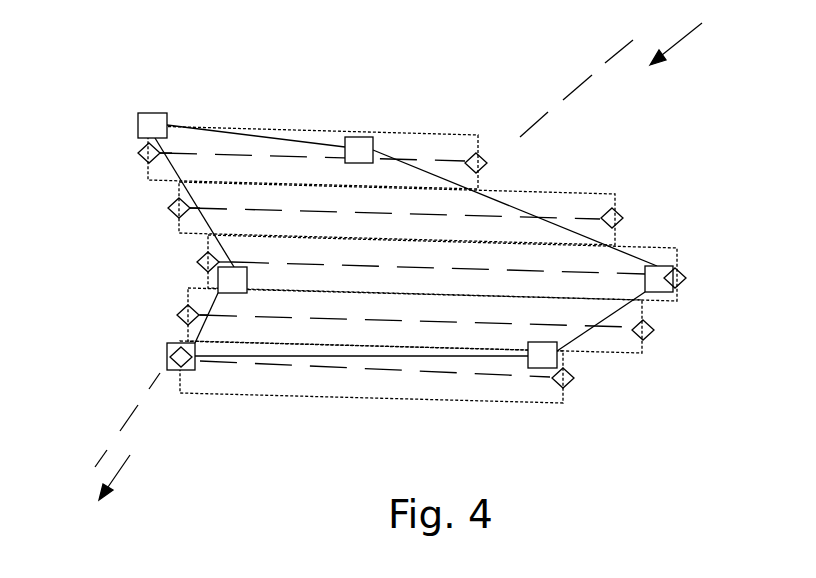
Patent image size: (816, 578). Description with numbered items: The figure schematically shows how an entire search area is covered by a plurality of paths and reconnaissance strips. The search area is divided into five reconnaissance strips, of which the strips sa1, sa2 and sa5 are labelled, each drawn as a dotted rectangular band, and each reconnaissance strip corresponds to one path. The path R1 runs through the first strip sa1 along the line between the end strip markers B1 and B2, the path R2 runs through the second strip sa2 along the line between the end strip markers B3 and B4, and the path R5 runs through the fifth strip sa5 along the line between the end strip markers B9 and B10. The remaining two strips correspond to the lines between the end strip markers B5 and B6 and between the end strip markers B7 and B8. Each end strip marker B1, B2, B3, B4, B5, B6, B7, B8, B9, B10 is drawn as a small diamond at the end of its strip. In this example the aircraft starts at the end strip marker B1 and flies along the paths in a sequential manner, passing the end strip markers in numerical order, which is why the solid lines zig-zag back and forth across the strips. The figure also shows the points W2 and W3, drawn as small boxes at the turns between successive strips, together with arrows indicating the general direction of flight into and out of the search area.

The waypoint W2 is at (348, 137).
The waypoint W3 is at (147, 113).
The path R1 is at (263, 157).
The path R2 is at (376, 222).
The path R5 is at (347, 367).
The reconnaissance strip sa1 is at (418, 156).
The reconnaissance strip sa2 is at (397, 213).
The reconnaissance strip sa5 is at (406, 387).
The end strip marker B1 is at (488, 167).
The end strip marker B2 is at (138, 155).
The end strip marker B3 is at (168, 208).
The end strip marker B4 is at (622, 216).
The end strip marker B5 is at (686, 272).
The end strip marker B6 is at (198, 262).
The end strip marker B7 is at (177, 315).
The end strip marker B8 is at (654, 328).
The end strip marker B9 is at (573, 375).
The end strip marker B10 is at (167, 358).